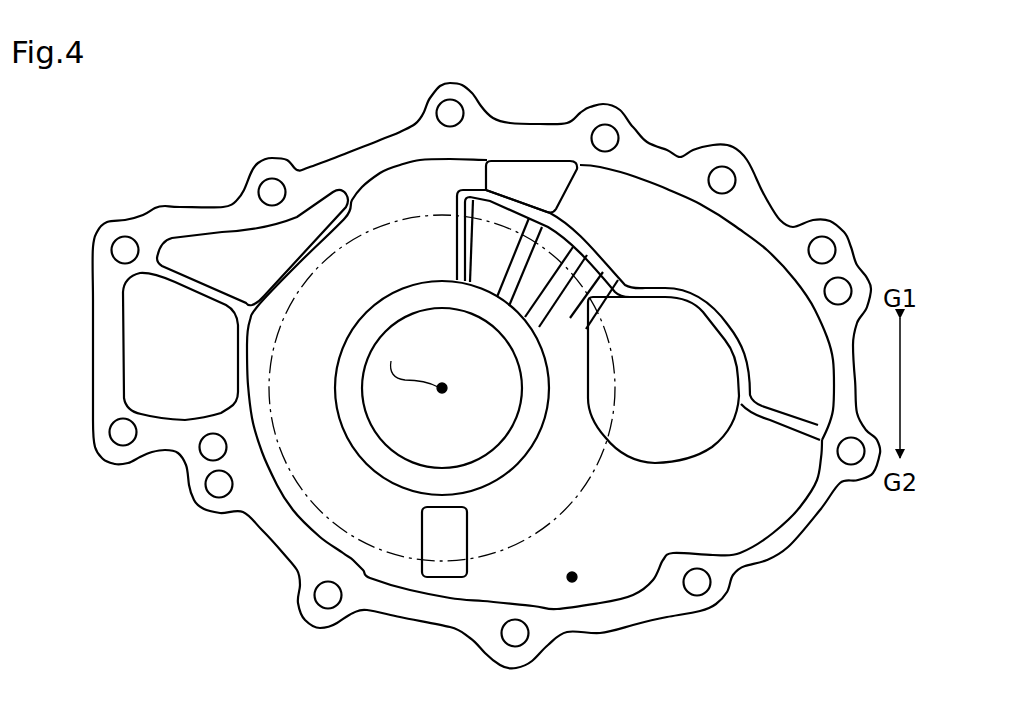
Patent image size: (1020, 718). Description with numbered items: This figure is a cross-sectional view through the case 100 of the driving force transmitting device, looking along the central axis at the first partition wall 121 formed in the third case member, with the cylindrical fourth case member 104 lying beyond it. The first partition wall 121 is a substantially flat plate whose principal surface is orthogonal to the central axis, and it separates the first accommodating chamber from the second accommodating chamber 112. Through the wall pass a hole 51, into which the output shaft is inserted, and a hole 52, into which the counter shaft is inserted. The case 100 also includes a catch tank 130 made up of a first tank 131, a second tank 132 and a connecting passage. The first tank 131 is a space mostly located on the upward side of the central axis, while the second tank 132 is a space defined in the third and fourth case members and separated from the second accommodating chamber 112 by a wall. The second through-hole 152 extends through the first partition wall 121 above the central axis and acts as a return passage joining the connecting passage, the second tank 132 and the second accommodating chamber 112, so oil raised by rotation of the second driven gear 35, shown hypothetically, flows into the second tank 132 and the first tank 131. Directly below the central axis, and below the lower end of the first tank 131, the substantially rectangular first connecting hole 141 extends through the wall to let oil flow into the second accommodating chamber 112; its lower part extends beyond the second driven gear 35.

The case 100 is at (203, 97).
The catch tank 130 is at (762, 142).
The fourth case member 104 is at (662, 162).
The first partition wall 121 is at (628, 563).
The first tank 131 is at (168, 403).
The second through-hole 152 is at (516, 170).
The hole 51 is at (418, 320).
The second driven gear 35 is at (387, 550).
The hole 52 is at (661, 462).
The second tank 132 is at (790, 412).
The first connecting hole 141 is at (441, 568).
The second accommodating chamber 112 is at (572, 582).